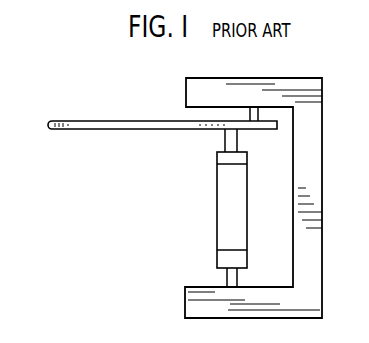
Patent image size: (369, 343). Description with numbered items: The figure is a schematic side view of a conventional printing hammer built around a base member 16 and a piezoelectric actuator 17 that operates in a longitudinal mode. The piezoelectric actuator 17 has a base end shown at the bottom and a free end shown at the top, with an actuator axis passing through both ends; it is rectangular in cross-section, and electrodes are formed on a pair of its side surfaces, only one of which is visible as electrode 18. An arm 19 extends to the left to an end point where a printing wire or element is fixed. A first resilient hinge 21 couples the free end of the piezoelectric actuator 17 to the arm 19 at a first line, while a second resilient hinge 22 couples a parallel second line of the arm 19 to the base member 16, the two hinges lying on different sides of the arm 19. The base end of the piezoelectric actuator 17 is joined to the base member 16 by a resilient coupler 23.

The base member 16 is at (186, 97).
The piezoelectric actuator 17 is at (210, 210).
The electrode 18 is at (231, 210).
The arm 19 is at (92, 120).
The first resilient hinge 21 is at (225, 141).
The second resilient hinge 22 is at (256, 118).
The resilient coupler 23 is at (227, 275).